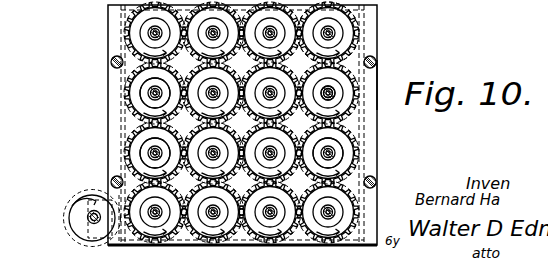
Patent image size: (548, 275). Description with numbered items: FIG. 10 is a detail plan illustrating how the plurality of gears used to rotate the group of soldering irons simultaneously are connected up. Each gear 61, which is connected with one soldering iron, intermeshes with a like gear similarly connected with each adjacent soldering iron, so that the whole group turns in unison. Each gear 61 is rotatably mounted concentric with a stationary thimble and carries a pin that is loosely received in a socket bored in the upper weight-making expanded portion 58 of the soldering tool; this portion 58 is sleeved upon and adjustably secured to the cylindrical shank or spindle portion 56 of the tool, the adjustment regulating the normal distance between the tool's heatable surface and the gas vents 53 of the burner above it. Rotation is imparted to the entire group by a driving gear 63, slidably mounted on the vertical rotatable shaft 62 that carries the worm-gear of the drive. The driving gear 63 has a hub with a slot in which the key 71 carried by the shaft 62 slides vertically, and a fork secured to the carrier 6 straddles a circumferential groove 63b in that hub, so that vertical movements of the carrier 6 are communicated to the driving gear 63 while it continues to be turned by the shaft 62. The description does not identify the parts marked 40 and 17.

The frame 40 is at (108, 13).
The gear 61 is at (138, 88).
The upper weight-making cylindrical expanded portion 58 is at (142, 160).
The gas vents 53 is at (352, 17).
The shank or spindle portion 56 is at (330, 92).
The shaft 17 is at (330, 95).
The carrier 6 is at (383, 85).
The vertical rotatable shaft 62 is at (88, 212).
The driving gear 63 is at (79, 192).
The circumferential groove 63b is at (95, 221).
The key 71 is at (106, 243).